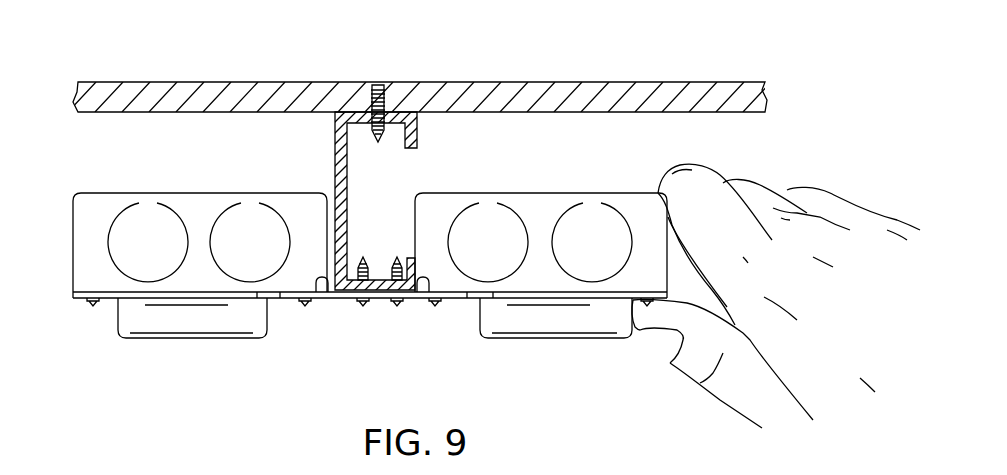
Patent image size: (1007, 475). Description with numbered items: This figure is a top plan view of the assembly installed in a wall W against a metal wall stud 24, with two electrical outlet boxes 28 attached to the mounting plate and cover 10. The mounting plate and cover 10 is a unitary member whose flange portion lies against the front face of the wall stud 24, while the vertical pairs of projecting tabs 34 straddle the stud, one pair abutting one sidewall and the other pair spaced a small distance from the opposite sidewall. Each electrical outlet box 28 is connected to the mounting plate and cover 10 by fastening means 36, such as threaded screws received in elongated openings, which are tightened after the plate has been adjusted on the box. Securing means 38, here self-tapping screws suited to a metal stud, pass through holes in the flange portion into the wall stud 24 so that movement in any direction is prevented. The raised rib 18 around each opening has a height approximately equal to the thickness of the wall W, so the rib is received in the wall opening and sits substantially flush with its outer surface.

The wall W is at (203, 82).
The mounting plate and cover 10 is at (70, 296).
The raised rib 18 is at (155, 338).
The wall stud 24 is at (348, 183).
The electrical outlet box 28 is at (200, 193).
The projecting tab 34 is at (323, 297).
The fastening means 36 is at (100, 310).
The securing means 38 is at (395, 306).